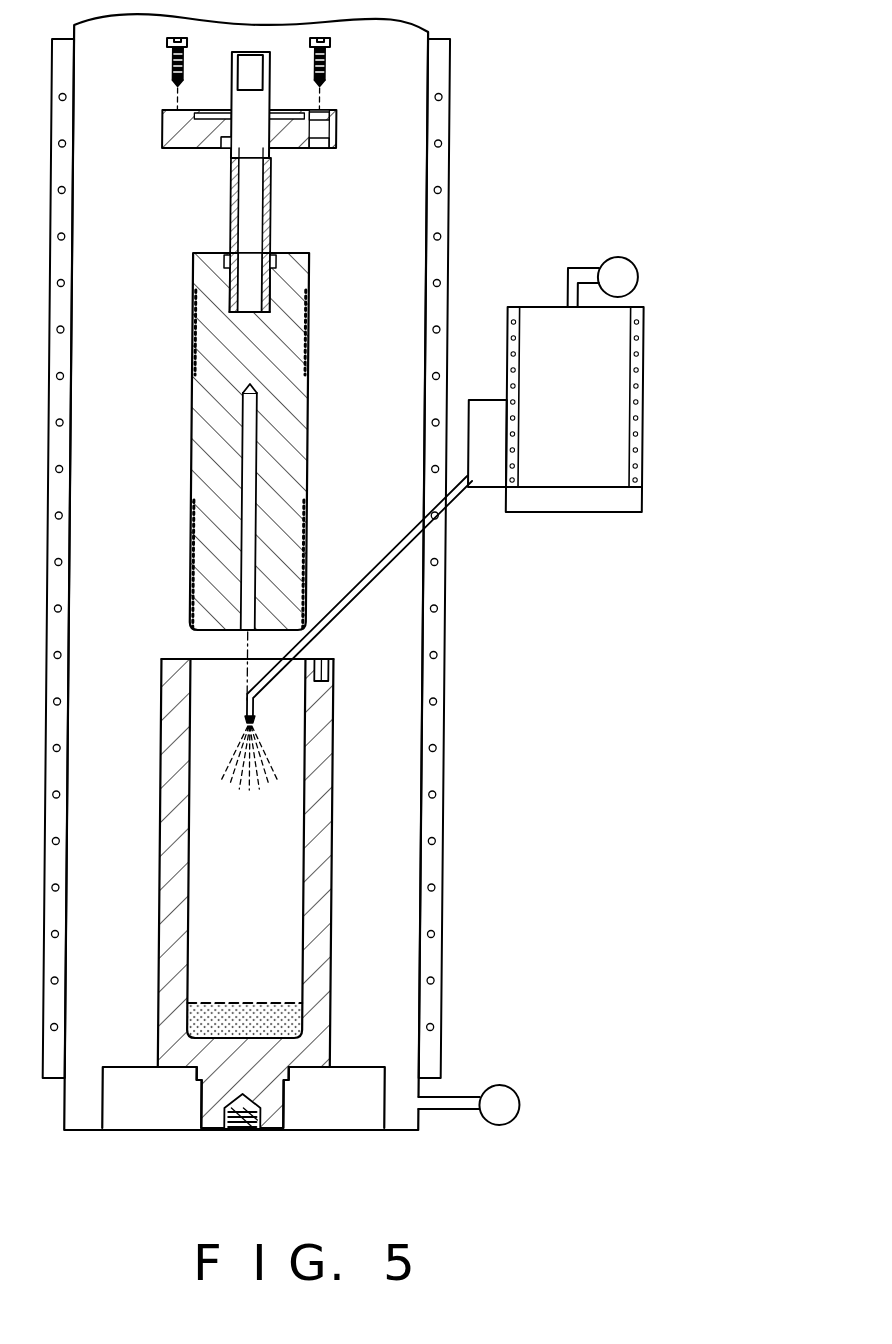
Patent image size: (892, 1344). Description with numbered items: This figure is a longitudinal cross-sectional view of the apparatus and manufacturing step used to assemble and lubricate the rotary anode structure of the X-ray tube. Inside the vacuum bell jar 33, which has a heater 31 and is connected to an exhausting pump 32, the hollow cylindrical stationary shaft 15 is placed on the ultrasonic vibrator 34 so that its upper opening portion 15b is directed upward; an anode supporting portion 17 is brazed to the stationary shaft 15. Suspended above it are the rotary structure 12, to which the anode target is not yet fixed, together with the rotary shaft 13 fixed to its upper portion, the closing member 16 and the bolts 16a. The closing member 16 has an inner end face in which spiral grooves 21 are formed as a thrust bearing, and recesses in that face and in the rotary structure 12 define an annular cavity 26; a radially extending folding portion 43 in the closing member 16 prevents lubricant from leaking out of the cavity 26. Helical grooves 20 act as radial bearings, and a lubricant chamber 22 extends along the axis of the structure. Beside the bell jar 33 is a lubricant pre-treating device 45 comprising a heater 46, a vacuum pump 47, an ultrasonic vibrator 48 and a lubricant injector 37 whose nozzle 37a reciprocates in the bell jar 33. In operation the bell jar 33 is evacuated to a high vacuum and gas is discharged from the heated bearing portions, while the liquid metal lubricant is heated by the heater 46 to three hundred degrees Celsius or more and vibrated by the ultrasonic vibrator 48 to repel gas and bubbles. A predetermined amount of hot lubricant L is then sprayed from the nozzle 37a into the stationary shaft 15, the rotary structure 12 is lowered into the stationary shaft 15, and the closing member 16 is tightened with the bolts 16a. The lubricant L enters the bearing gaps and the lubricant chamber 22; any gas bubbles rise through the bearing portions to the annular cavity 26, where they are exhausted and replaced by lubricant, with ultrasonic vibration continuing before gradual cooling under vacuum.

The rotary structure 12 is at (308, 399).
The rotary shaft 13 is at (268, 211).
The stationary shaft 15 is at (334, 823).
The upper opening portion 15b is at (178, 660).
The closing member 16 is at (158, 129).
The bolts 16a is at (168, 70).
The anode supporting portion 17 is at (222, 1118).
The helical grooves 20 is at (190, 329).
The spiral grooves 21 is at (191, 148).
The lubricant chamber 22 is at (250, 453).
The annular cavity 26 is at (270, 152).
The heater 31 is at (438, 753).
The exhausting pump 32 is at (505, 1085).
The vacuum bell jar 33 is at (430, 32).
The ultrasonic vibrator 34 is at (343, 1120).
The lubricant injector 37 is at (486, 478).
The nozzle 37a is at (330, 623).
The folding portion 43 is at (284, 111).
The lubricant pre-treating device 45 is at (614, 398).
The heater 46 is at (644, 335).
The vacuum pump 47 is at (617, 258).
The ultrasonic vibrator 48 is at (598, 504).
The lubricant L is at (233, 750).